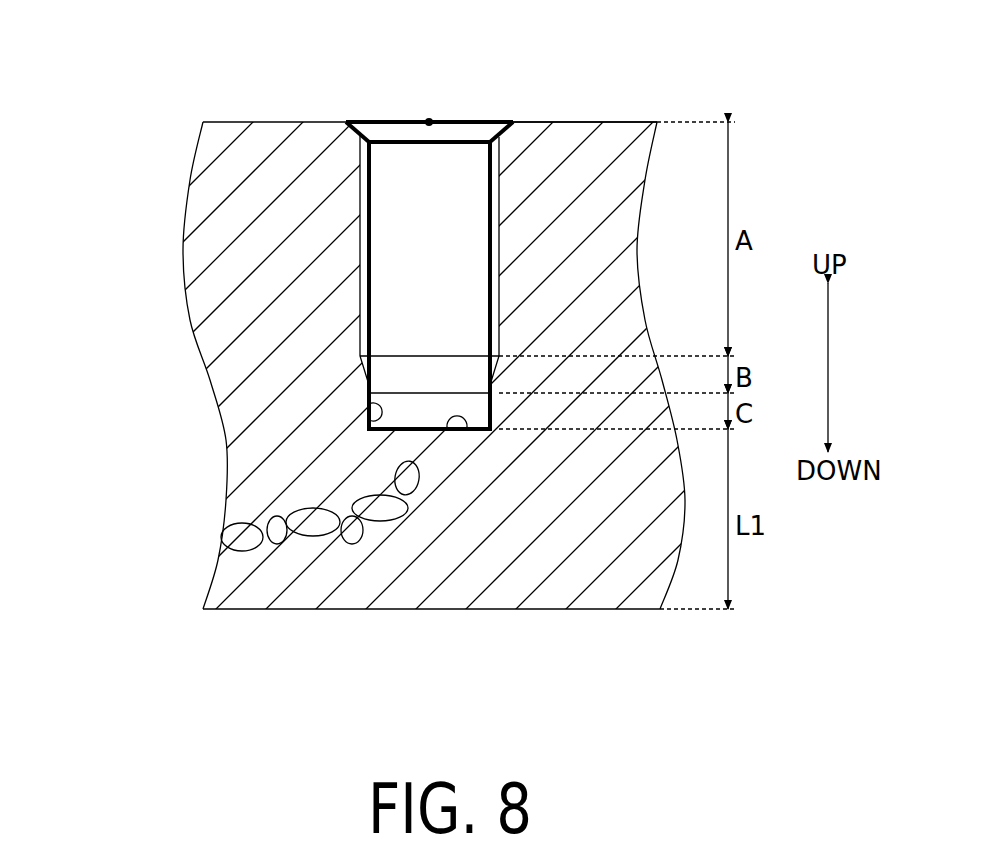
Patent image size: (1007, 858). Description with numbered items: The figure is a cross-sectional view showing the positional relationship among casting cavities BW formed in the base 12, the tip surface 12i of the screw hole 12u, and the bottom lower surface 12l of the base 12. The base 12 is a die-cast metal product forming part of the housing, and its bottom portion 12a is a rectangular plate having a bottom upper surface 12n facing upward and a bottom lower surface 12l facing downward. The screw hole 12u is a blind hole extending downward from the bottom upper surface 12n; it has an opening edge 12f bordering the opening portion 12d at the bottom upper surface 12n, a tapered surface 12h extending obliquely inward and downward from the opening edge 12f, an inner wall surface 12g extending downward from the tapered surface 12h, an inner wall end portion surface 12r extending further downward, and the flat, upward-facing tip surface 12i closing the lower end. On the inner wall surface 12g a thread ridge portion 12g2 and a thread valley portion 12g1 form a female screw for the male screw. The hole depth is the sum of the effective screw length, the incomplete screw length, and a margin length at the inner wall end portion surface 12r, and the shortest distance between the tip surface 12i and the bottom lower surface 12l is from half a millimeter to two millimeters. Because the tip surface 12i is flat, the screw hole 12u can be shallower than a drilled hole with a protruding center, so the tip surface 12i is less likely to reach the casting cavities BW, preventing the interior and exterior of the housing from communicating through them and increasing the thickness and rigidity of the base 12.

The base 12 is at (170, 605).
The bottom portion 12a is at (623, 120).
The bottom lower surface 12l is at (557, 610).
The bottom upper surface 12n is at (574, 121).
The screw hole 12u is at (458, 110).
The opening edge 12f is at (346, 121).
The tapered surface 12h is at (500, 121).
The opening portion 12d is at (429, 118).
The inner wall surface 12g is at (268, 281).
The thread valley portion 12g1 is at (367, 230).
The thread ridge portion 12g2 is at (367, 297).
The inner wall end portion surface 12r is at (368, 414).
The tip surface 12i is at (457, 433).
The casting cavities BW is at (410, 490).